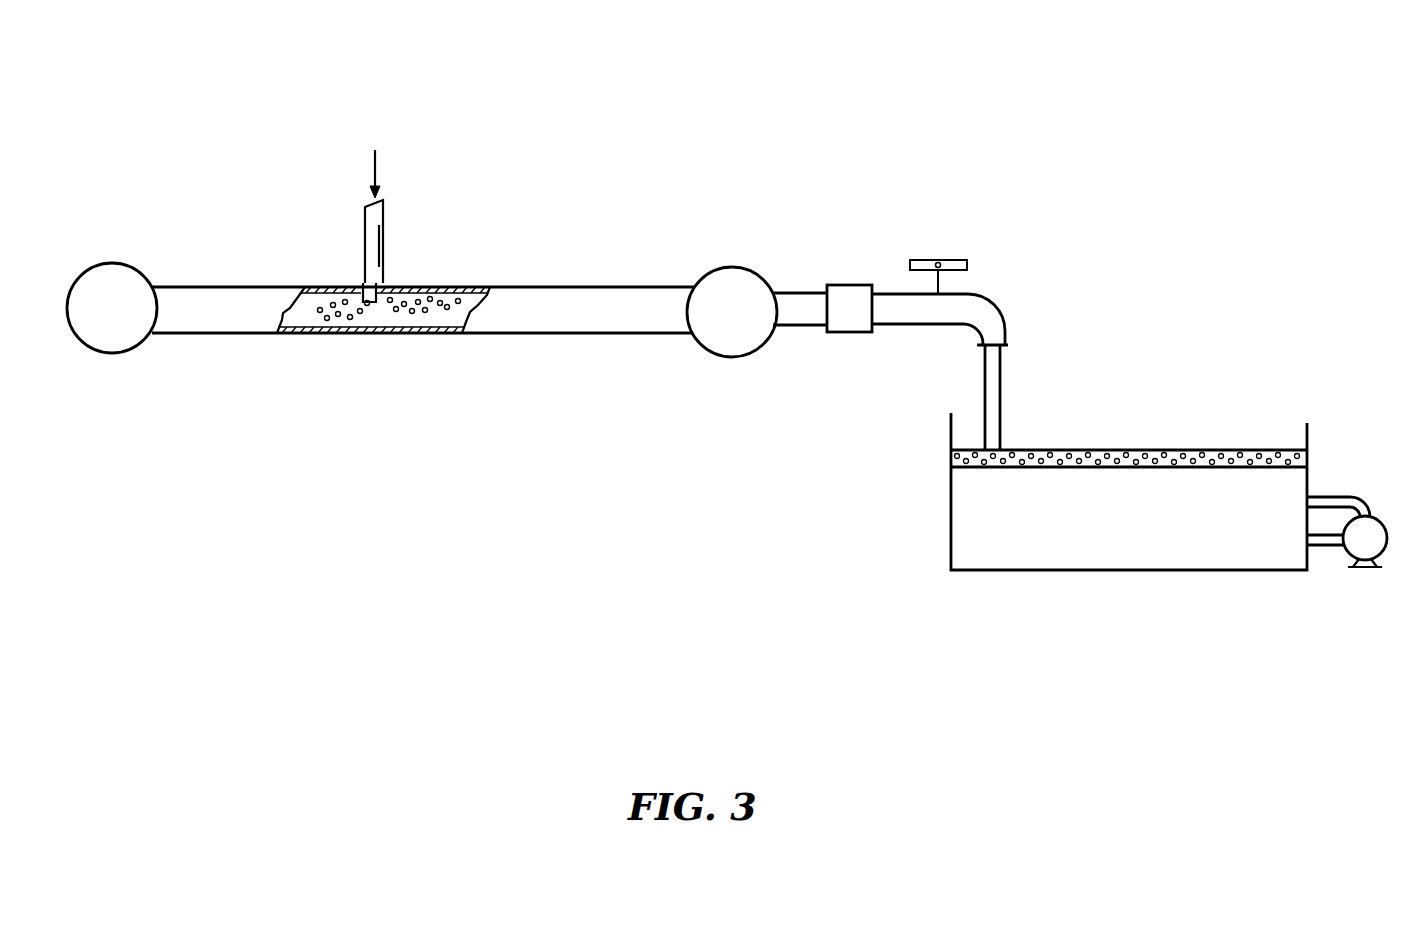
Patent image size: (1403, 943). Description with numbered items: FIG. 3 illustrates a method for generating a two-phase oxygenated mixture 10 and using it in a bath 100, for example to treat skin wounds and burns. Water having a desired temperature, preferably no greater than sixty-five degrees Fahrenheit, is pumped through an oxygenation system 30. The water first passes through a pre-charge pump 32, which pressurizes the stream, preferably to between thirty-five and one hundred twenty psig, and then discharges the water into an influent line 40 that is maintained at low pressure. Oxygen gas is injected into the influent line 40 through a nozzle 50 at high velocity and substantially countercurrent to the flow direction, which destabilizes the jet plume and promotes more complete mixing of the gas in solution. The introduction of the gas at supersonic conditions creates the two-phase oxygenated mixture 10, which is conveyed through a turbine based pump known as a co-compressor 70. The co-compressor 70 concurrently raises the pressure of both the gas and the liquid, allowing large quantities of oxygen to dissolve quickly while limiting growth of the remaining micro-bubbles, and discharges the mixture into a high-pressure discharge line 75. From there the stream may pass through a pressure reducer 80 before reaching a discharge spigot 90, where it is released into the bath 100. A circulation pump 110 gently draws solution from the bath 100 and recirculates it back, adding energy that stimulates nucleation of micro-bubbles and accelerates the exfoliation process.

The two-phase oxygenated mixture 10 is at (1155, 437).
The oxygenation system 30 is at (258, 140).
The pre-charge pump 32 is at (113, 262).
The influent line 40 is at (237, 320).
The nozzle 50 is at (360, 285).
The co-compressor 70 is at (713, 268).
The high-pressure discharge line 75 is at (792, 315).
The pressure reducer 80 is at (853, 285).
The discharge spigot 90 is at (973, 258).
The bath 100 is at (951, 542).
The circulation pump 110 is at (1363, 570).